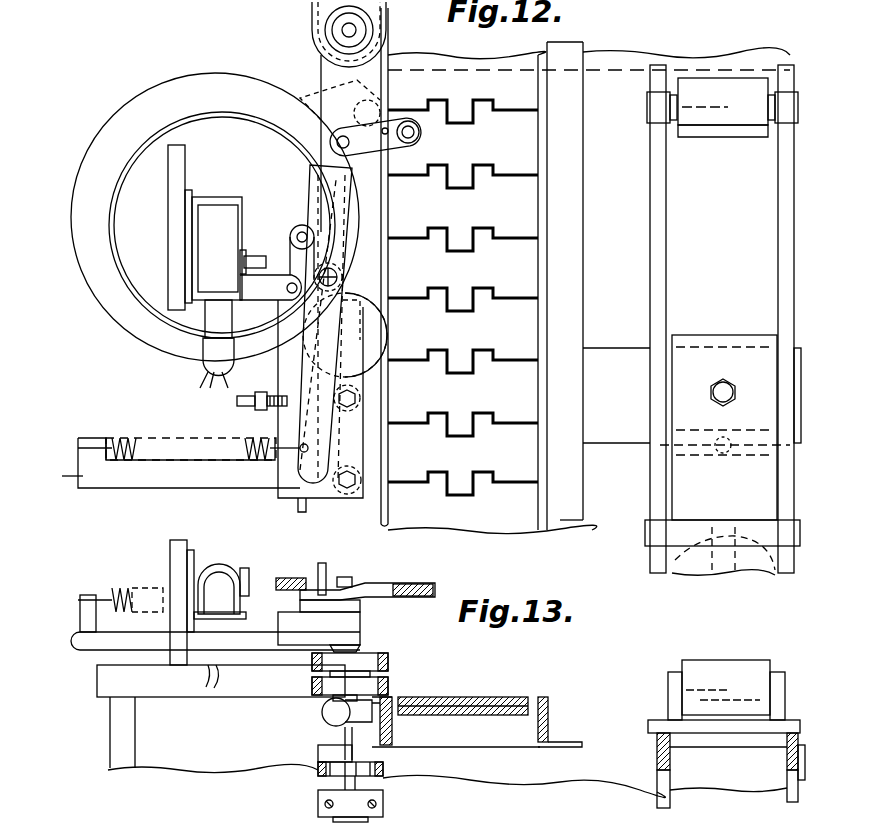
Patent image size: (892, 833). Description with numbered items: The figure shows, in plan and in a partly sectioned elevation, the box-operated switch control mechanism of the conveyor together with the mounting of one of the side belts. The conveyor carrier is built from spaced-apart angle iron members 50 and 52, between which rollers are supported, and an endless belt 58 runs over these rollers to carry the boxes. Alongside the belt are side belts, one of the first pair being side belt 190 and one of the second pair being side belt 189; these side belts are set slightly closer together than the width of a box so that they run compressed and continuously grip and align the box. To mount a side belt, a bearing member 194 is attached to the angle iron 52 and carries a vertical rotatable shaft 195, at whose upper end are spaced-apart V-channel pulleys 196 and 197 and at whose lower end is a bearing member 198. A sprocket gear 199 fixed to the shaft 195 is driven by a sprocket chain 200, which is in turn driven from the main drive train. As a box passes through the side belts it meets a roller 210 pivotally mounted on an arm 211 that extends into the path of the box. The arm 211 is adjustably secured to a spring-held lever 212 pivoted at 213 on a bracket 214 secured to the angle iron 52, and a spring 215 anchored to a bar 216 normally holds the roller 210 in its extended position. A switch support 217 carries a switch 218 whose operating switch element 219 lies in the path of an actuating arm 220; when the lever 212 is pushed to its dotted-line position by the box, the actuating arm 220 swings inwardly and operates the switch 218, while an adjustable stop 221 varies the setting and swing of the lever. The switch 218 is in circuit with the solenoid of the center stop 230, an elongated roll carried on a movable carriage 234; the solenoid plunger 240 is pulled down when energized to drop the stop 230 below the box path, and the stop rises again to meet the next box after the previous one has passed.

In FIG. 12, the angle iron member 50 is at (583, 497).
In FIG. 13, the angle iron member 50 is at (549, 712).
In FIG. 12, the angle iron member 52 is at (388, 521).
In FIG. 13, the angle iron member 52 is at (392, 732).
In FIG. 12, the endless belt 58 is at (583, 256).
In FIG. 13, the endless belt 58 is at (510, 710).
In FIG. 12, the side belt 189 is at (324, 13).
In FIG. 12, the side belt 190 is at (389, 387).
In FIG. 13, the side belt 190 is at (372, 680).
In FIG. 13, the bearing member 194 is at (325, 714).
In FIG. 13, the rotatable shaft 195 is at (336, 737).
In FIG. 12, the pulley 196 is at (388, 332).
In FIG. 13, the pulley 196 is at (370, 660).
In FIG. 13, the pulley 197 is at (370, 692).
In FIG. 13, the bearing member 198 is at (383, 808).
In FIG. 13, the sprocket gear 199 is at (385, 770).
In FIG. 13, the sprocket chain 200 is at (318, 770).
In FIG. 12, the roller 210 is at (425, 137).
In FIG. 13, the roller 210 is at (430, 590).
In FIG. 12, the arm 211 is at (385, 130).
In FIG. 13, the arm 211 is at (368, 588).
In FIG. 12, the spring-held lever 212 is at (345, 203).
In FIG. 13, the spring-held lever 212 is at (340, 603).
In FIG. 12, the pivot 213 is at (340, 284).
In FIG. 12, the bracket 214 is at (350, 267).
In FIG. 12, the spring 215 is at (125, 438).
In FIG. 13, the spring 215 is at (125, 590).
In FIG. 12, the bar 216 is at (62, 476).
In FIG. 13, the bar 216 is at (85, 641).
In FIG. 13, the switch support 217 is at (118, 733).
In FIG. 12, the switch 218 is at (241, 203).
In FIG. 13, the switch 218 is at (237, 570).
In FIG. 12, the operating switch element 219 is at (265, 255).
In FIG. 12, the actuating arm 220 is at (296, 226).
In FIG. 13, the actuating arm 220 is at (297, 578).
In FIG. 12, the adjustable stop 221 is at (238, 403).
In FIG. 12, the center stop 230 is at (719, 88).
In FIG. 13, the center stop 230 is at (721, 673).
In FIG. 12, the movable carriage 234 is at (660, 271).
In FIG. 12, the plunger 240 is at (692, 555).